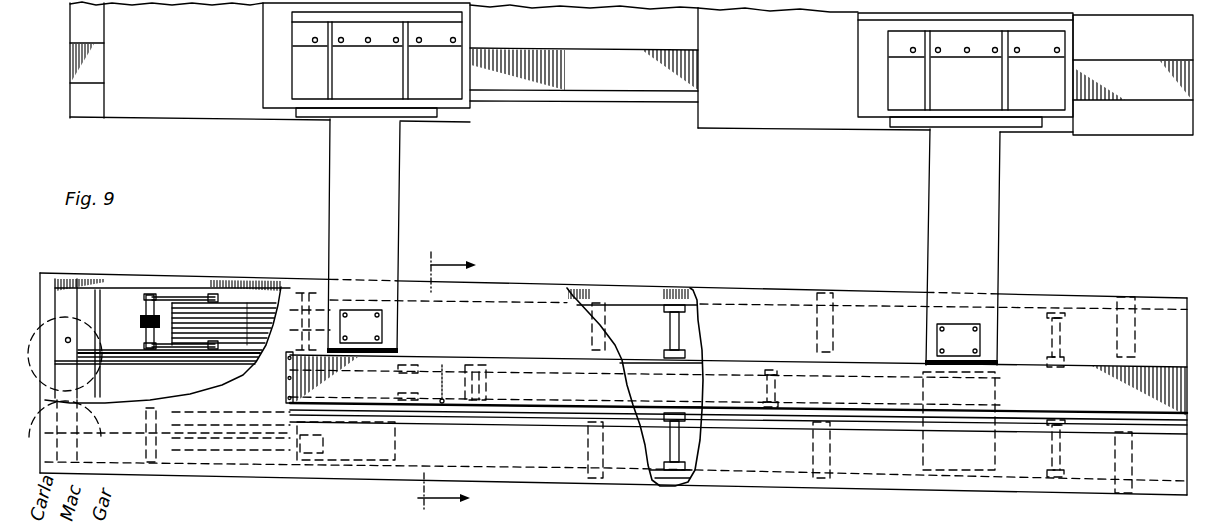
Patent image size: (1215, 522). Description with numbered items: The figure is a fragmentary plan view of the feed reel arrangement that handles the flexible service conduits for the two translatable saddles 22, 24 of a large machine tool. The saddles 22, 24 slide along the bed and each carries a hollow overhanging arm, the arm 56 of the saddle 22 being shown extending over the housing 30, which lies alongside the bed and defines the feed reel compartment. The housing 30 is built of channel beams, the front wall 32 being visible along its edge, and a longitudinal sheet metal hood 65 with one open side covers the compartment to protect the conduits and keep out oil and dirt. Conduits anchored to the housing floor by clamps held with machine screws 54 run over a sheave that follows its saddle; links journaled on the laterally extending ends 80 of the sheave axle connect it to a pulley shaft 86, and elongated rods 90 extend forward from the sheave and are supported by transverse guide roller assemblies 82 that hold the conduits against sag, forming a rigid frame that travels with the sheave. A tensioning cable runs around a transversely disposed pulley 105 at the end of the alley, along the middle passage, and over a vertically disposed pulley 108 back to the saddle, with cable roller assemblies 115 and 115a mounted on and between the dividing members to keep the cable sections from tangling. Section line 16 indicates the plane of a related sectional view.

The saddle 22 is at (258, 118).
The saddle 24 is at (763, 116).
The arm 56 is at (397, 218).
The pulley shaft 86 is at (150, 296).
The laterally extending ends of sheave axle 80 is at (212, 300).
The machine screws 54 is at (278, 285).
The pulley 105 is at (41, 336).
The pulley 108 is at (113, 375).
The section line 16- 16 is at (461, 382).
The cable roller assembly 115a is at (438, 366).
The hood 65 is at (508, 375).
The elongated rods 90 is at (635, 303).
The guide roller assembly 82 is at (660, 330).
The cable roller assembly 115 is at (780, 384).
The housing 30 is at (532, 462).
The front wall 32 is at (673, 484).